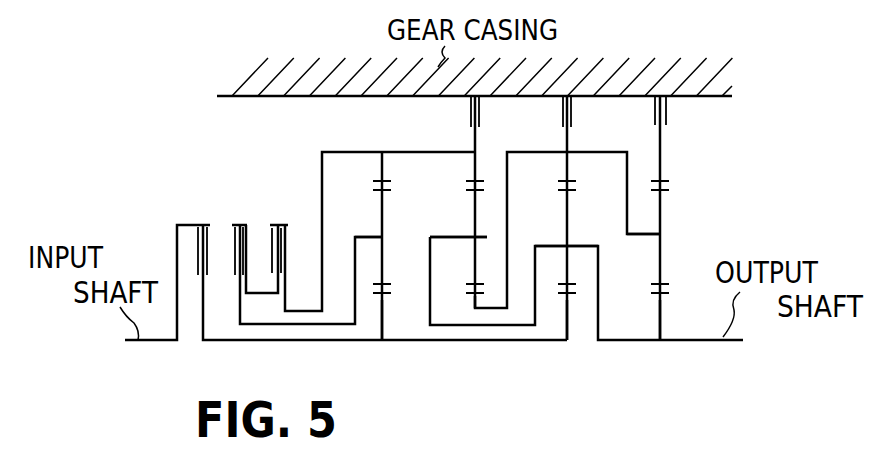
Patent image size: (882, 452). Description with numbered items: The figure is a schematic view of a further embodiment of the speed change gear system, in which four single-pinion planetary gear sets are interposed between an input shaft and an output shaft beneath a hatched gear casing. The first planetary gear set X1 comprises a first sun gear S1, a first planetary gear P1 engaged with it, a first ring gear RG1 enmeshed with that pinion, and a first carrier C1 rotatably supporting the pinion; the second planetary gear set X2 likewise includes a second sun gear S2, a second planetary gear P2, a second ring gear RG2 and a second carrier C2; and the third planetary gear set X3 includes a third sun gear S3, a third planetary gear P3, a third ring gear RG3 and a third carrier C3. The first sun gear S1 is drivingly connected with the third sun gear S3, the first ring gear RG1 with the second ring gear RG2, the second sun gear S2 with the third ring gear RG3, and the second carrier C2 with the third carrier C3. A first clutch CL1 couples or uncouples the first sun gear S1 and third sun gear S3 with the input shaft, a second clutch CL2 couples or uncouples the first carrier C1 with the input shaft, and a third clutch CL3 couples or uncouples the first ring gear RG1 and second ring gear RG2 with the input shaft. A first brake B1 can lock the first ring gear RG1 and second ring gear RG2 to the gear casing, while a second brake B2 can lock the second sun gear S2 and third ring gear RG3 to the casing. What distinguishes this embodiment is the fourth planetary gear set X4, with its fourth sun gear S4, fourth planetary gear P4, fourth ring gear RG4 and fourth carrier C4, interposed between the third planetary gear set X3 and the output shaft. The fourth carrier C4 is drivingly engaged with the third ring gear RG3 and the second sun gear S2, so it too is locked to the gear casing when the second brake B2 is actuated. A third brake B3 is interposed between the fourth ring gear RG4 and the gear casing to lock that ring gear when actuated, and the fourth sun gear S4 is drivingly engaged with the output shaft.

The first clutch CL1 is at (206, 227).
The second clutch CL2 is at (245, 227).
The third clutch CL3 is at (289, 227).
The first brake B1 is at (472, 108).
The second brake B2 is at (565, 108).
The third brake B3 is at (657, 108).
The first ring gear RG1 is at (386, 168).
The second ring gear RG2 is at (477, 161).
The third ring gear RG3 is at (569, 168).
The fourth ring gear RG4 is at (662, 168).
The first carrier C1 is at (386, 237).
The second carrier C2 is at (492, 222).
The third carrier C3 is at (567, 244).
The fourth carrier C4 is at (660, 234).
The first planetary gear P1 is at (384, 262).
The second planetary gear P2 is at (475, 262).
The third planetary gear P3 is at (568, 258).
The fourth planetary gear P4 is at (662, 260).
The first sun gear S1 is at (384, 312).
The second sun gear S2 is at (474, 300).
The third sun gear S3 is at (568, 321).
The fourth sun gear S4 is at (662, 315).
The first planetary gear set X1 is at (373, 325).
The second planetary gear set X2 is at (489, 307).
The third planetary gear set X3 is at (556, 325).
The fourth planetary gear set X4 is at (650, 324).